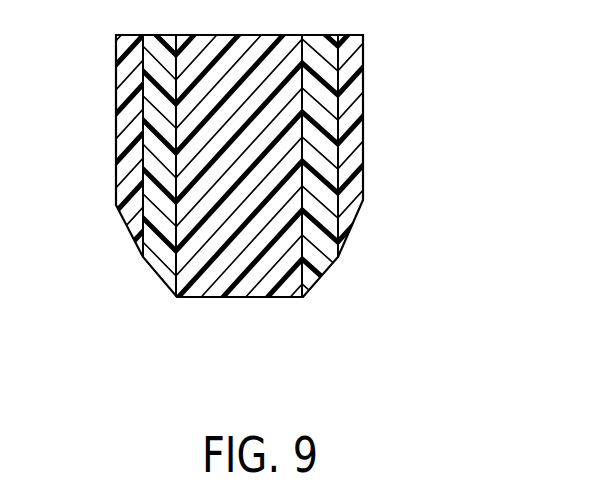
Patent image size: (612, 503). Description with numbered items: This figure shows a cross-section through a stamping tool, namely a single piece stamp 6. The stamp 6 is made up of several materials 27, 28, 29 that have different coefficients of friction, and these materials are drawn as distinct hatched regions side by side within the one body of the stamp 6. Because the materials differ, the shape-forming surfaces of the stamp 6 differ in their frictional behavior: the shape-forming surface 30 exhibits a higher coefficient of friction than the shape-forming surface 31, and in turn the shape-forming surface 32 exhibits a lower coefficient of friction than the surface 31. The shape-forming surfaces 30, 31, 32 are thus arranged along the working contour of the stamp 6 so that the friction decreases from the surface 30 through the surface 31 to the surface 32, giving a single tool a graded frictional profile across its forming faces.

The stamp 6 is at (366, 58).
The material 27 is at (337, 102).
The material 28 is at (273, 137).
The material 29 is at (347, 203).
The shape-forming surface 30 is at (122, 240).
The shape-forming surface 31 is at (152, 283).
The shape-forming surface 32 is at (208, 310).